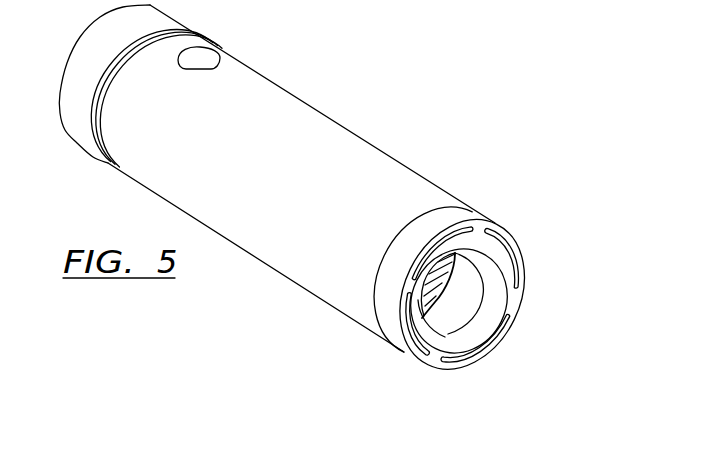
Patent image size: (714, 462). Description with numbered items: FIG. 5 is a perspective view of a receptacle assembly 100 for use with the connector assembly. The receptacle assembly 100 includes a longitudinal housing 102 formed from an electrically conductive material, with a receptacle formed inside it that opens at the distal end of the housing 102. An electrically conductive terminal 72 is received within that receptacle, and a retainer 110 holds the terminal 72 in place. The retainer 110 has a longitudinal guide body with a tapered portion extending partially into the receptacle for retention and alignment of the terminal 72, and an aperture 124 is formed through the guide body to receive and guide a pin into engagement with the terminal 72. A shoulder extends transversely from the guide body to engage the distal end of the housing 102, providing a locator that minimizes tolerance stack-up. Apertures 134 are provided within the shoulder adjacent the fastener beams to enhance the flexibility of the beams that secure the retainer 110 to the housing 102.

The receptacle assembly 100 is at (423, 79).
The longitudinal housing 102 is at (308, 293).
The retainer 110 is at (497, 213).
The aperture 124 is at (472, 270).
The electrically conductive terminal 72 is at (447, 275).
The apertures 134 is at (413, 348).